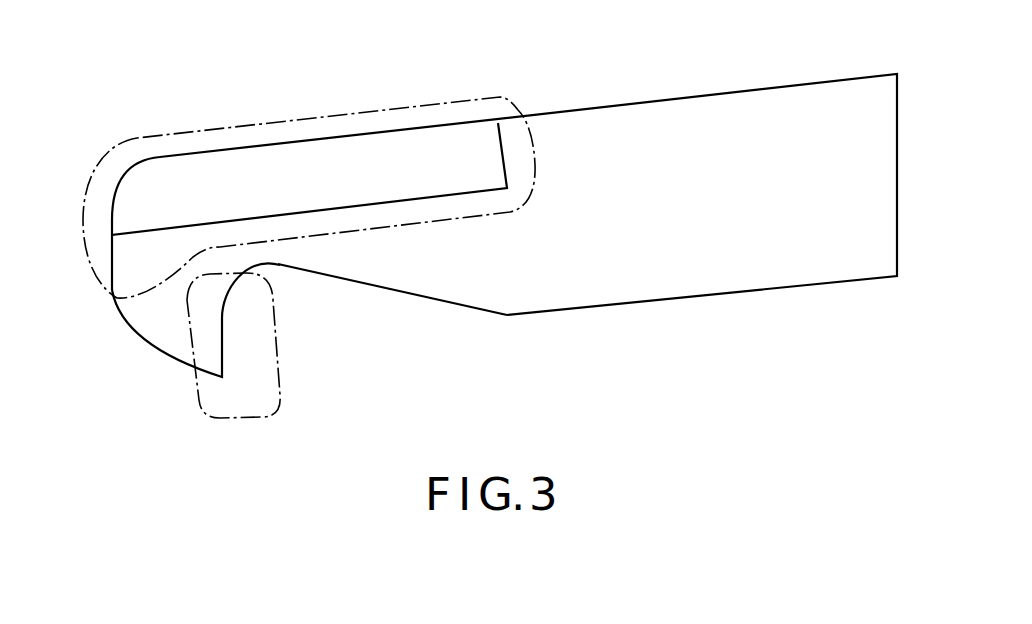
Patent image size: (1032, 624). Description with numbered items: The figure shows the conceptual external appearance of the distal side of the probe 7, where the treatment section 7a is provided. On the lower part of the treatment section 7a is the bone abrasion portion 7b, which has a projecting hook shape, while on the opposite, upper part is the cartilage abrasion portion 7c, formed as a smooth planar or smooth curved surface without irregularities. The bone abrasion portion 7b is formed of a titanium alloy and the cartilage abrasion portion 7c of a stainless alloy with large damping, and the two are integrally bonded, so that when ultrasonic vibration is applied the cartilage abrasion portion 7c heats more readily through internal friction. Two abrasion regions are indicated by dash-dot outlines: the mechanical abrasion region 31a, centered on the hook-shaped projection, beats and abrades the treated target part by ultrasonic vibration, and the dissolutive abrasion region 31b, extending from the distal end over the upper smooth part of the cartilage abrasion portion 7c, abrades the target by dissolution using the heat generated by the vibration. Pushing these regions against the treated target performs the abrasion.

The probe 7 is at (837, 80).
The treatment section 7a is at (398, 325).
The bone abrasion portion 7b is at (222, 348).
The cartilage abrasion portion 7c is at (250, 147).
The mechanical abrasion region 31a is at (273, 300).
The dissolutive abrasion region 31b is at (392, 108).